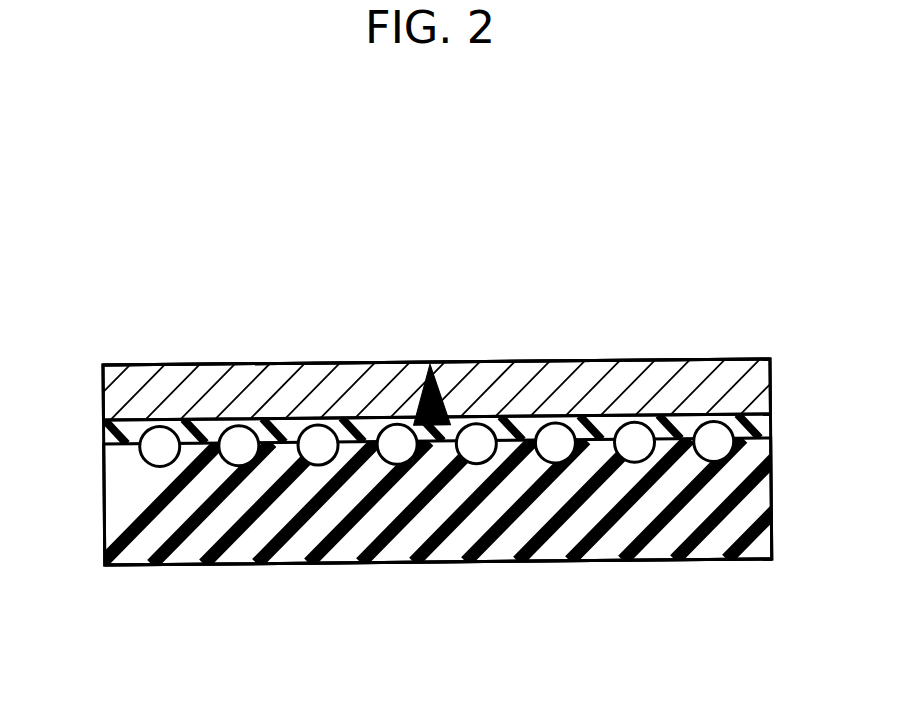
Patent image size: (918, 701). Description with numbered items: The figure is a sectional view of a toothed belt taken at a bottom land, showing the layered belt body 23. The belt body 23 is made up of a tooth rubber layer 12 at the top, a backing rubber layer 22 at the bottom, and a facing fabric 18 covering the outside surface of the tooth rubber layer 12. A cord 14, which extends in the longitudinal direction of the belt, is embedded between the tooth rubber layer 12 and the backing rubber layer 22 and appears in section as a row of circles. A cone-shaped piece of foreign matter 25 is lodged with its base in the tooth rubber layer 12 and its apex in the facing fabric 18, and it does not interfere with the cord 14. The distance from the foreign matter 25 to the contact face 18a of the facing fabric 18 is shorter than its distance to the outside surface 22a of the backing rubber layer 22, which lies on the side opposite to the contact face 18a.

The tooth rubber layer 12 is at (763, 416).
The cord 14 is at (160, 447).
The facing fabric 18 is at (747, 385).
The contact face 18a is at (258, 364).
The backing rubber layer 22 is at (743, 498).
The outside surface 22a is at (541, 562).
The belt body 23 is at (848, 362).
The foreign matter 25 is at (430, 366).